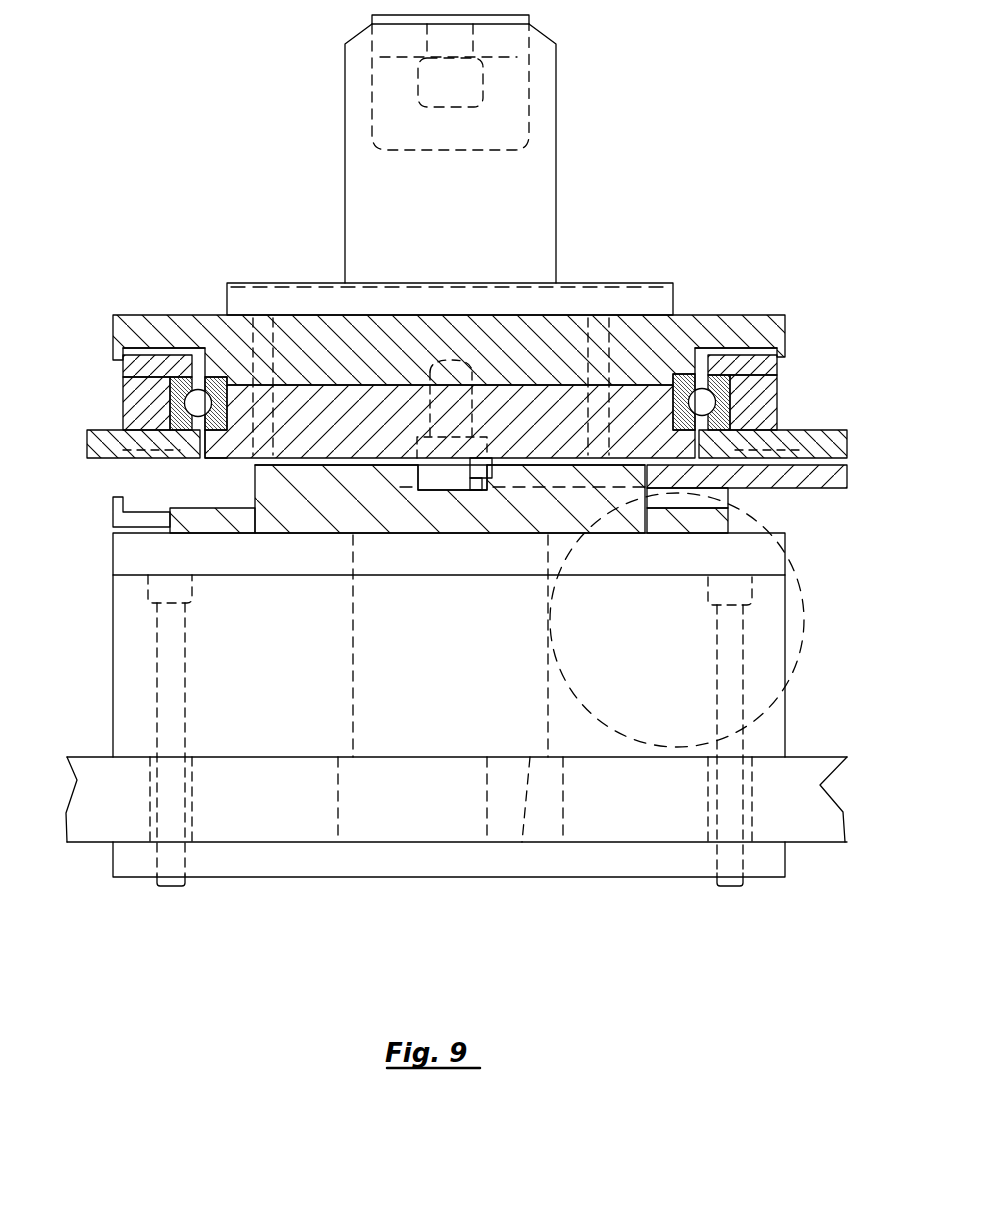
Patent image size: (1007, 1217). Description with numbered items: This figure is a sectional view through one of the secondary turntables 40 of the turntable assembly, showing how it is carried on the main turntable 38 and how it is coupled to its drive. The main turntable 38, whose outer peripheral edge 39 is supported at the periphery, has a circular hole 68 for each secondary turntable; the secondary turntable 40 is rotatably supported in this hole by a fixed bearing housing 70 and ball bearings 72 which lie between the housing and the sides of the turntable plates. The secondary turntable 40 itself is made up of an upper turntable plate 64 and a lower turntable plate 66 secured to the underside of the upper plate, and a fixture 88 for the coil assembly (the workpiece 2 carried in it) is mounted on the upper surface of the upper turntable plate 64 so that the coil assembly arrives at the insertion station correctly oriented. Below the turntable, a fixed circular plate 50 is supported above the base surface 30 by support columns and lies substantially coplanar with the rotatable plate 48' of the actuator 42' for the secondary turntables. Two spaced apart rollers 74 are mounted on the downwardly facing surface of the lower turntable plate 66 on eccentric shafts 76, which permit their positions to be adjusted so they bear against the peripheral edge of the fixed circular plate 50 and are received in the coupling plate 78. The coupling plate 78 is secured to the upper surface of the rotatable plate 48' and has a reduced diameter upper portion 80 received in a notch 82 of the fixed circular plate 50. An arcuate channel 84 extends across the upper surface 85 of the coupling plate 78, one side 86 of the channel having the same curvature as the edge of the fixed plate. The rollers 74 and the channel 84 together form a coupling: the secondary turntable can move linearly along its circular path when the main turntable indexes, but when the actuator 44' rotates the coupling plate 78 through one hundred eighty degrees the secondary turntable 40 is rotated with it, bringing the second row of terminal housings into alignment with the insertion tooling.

The workpiece 2 is at (533, 71).
The fixture 88 is at (563, 186).
The upper turntable plate 64 is at (665, 335).
The secondary turntable 40 is at (789, 315).
The lower turntable plate 66 is at (548, 397).
The shaft 76 is at (425, 366).
The ball bearing 72 is at (188, 403).
The bearing housing 70 is at (128, 358).
The peripheral edge 39 is at (100, 430).
The main turntable 38 is at (796, 430).
The circular hole 68 is at (208, 458).
The fixed circular plate 50 is at (793, 480).
The upper surface 85 is at (312, 463).
The coupling plate 78 is at (405, 517).
The reduced diameter upper portion 80 is at (272, 492).
The arcuate channel 84 is at (434, 490).
The roller 74 is at (450, 475).
The side 86 is at (478, 478).
The notch 82 is at (641, 492).
The rotatable plate 48' is at (485, 554).
The actuator 42' is at (491, 710).
The actuator 44' is at (710, 620).
The surface 30 is at (628, 813).